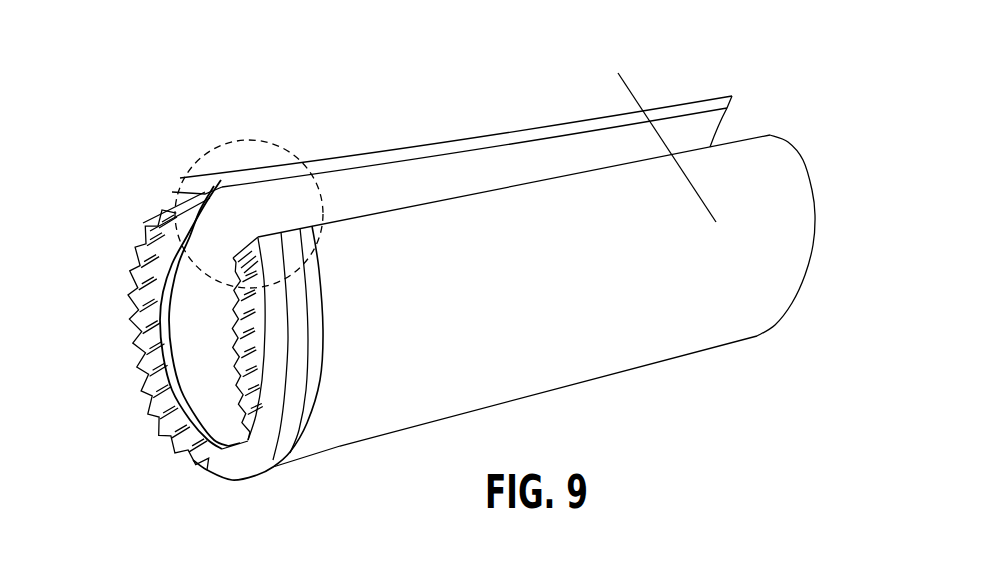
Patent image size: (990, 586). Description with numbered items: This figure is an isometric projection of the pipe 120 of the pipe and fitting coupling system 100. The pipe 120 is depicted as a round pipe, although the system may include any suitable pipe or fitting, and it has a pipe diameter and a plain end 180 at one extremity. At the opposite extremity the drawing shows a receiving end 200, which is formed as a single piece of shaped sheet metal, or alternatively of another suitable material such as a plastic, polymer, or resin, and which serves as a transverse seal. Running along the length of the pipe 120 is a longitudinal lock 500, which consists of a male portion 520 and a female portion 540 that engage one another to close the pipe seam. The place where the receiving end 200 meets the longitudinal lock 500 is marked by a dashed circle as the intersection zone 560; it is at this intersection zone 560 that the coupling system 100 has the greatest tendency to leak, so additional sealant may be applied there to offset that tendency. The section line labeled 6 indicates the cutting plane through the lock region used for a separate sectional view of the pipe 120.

The pipe and fitting coupling system 100 is at (598, 59).
The first pipe 120 is at (309, 100).
The plain end 180 is at (804, 281).
The receiving end 200 is at (247, 487).
The longitudinal lock 500 is at (460, 177).
The male portion 520 is at (513, 128).
The female portion 540 is at (597, 167).
The intersection zone 560 is at (241, 141).
The section line 6- 6 is at (634, 82).